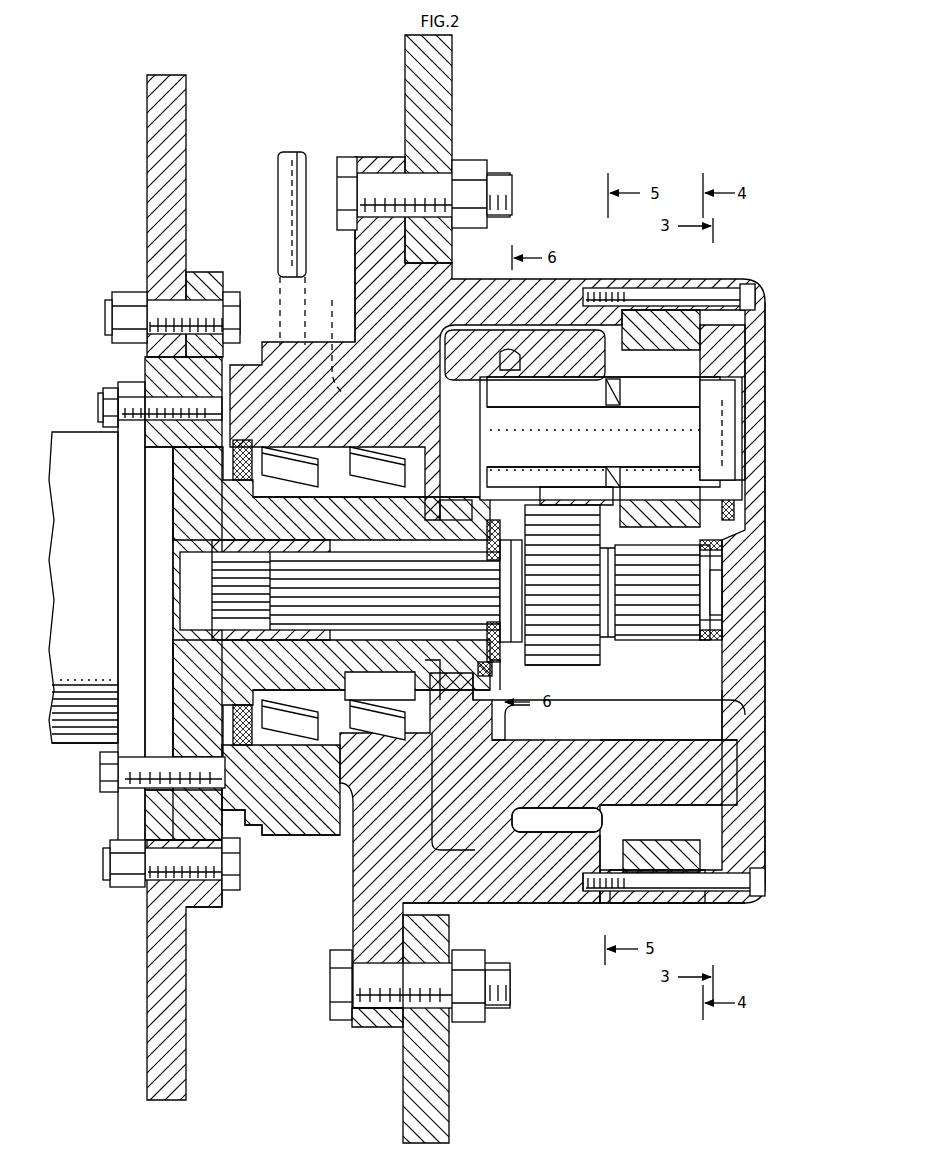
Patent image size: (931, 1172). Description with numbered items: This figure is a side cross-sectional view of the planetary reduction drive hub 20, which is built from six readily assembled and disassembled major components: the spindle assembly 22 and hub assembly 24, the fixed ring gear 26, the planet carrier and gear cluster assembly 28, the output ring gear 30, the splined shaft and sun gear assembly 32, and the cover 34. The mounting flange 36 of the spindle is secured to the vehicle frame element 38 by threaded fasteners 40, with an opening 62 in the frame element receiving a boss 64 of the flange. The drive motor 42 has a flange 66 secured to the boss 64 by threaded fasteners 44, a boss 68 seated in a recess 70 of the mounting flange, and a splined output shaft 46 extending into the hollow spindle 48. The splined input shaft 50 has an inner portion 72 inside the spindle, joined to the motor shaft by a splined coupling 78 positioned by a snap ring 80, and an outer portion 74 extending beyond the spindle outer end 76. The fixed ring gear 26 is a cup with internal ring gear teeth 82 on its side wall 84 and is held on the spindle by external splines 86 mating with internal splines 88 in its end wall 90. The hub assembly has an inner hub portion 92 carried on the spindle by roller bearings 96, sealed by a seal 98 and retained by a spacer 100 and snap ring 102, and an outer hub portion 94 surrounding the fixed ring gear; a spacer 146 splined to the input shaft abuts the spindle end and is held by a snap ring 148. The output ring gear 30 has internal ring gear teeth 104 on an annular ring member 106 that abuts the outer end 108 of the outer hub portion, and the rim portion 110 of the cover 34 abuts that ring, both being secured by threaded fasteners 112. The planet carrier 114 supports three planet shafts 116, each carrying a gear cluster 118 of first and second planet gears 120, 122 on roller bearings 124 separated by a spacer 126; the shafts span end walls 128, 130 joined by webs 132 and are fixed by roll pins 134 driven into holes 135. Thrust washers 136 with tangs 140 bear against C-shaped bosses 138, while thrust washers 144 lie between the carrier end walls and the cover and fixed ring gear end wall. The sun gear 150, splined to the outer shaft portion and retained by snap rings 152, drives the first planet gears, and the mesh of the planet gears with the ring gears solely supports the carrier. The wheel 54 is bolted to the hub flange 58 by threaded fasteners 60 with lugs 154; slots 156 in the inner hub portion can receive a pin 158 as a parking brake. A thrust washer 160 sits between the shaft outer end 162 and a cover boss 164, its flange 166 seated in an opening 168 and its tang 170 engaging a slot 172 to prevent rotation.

The planetary reduction drive hub 20 is at (627, 111).
The spindle assembly 22 is at (240, 903).
The hub assembly 24 is at (597, 277).
The fixed ring gear 26 is at (449, 834).
The planet carrier and gear cluster assembly 28 is at (615, 813).
The output ring gear 30 is at (668, 906).
The splined shaft and sun gear assembly 32 is at (606, 656).
The cover 34 is at (768, 586).
The mounting flange 36 is at (205, 908).
The frame element 38 is at (178, 122).
The threaded fasteners 40 is at (241, 872).
The drive motor 42 is at (78, 508).
The threaded fasteners 44 is at (103, 773).
The splined output shaft 46 is at (219, 597).
The hollow spindle 48 is at (284, 668).
The splined input shaft 50 is at (612, 645).
The wheel 54 is at (448, 1096).
The flange 58 is at (376, 1028).
The threaded fasteners 60 is at (330, 989).
The opening 62 is at (150, 822).
The boss 64 is at (145, 806).
The flange 66 is at (130, 624).
The boss 68 is at (130, 563).
The recess 70 is at (158, 460).
The inner portion 72 is at (412, 597).
The outer portion 74 is at (646, 597).
The outer end 76 is at (493, 665).
The splined coupling 78 is at (228, 655).
The snap ring 80 is at (262, 640).
The internal ring gear teeth 82 is at (557, 807).
The side wall 84 is at (545, 860).
The external splines 86 is at (418, 505).
The internal splines 88 is at (456, 697).
The end wall 90 is at (450, 778).
The inner hub portion 92 is at (379, 399).
The outer hub portion 94 is at (500, 905).
The roller bearings 96 is at (374, 735).
The seal 98 is at (233, 458).
The spacer 100 is at (420, 672).
The snap ring 102 is at (441, 672).
The internal ring gear teeth 104 is at (672, 840).
The annular ring member 106 is at (630, 904).
The outer end 108 is at (606, 895).
The rim portion 110 is at (733, 905).
The threaded fasteners 112 is at (768, 881).
The planet carrier 114 is at (657, 780).
The planet shafts 116 is at (613, 438).
The gear cluster 118 is at (601, 503).
The first planet gears 120 is at (549, 501).
The second planet gears 122 is at (647, 515).
The roller bearings 124 is at (560, 466).
The spacer 126 is at (610, 405).
The end wall 128 is at (722, 704).
The end wall 130 is at (512, 720).
The webs 132 is at (640, 742).
The roll pins 134 is at (738, 387).
The holes 135 is at (745, 428).
The thrust washers 136 is at (512, 368).
The C-shaped bosses 138 is at (480, 382).
The tangs 140 is at (475, 513).
The thrust washers 144 is at (738, 498).
The spacer 146 is at (498, 552).
The snap ring 148 is at (500, 594).
The sun gear 150 is at (568, 668).
The snap rings 152 is at (588, 590).
The lugs 154 is at (468, 1024).
The slots 156 is at (303, 873).
The pin 158 is at (278, 199).
The thrust washer 160 is at (725, 548).
The outer end 162 is at (725, 600).
The boss 164 is at (735, 525).
The flange 166 is at (725, 620).
The opening 168 is at (725, 562).
The tang 170 is at (700, 642).
The slot 172 is at (710, 650).